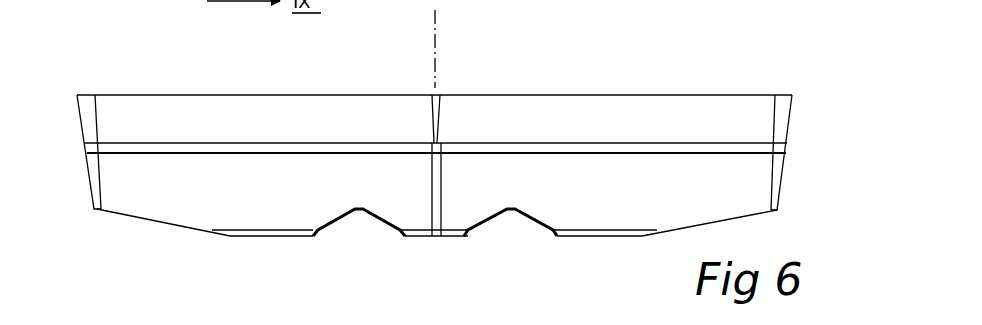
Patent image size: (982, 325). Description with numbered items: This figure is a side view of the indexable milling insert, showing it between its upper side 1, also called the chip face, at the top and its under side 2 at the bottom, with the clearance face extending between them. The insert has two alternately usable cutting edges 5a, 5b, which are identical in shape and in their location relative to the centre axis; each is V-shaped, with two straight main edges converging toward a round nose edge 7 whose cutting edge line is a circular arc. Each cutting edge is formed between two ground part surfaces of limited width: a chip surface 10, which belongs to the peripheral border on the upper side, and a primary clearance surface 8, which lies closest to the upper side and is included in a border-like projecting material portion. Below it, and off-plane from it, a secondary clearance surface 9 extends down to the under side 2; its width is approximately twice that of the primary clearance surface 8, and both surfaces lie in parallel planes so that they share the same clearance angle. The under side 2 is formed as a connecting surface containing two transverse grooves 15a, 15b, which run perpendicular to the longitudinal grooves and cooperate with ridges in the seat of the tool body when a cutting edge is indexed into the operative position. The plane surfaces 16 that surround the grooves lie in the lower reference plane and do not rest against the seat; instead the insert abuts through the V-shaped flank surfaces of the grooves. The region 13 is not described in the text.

The upper side 1 is at (527, 78).
The under side 2 is at (227, 244).
The cutting edge 5a is at (102, 93).
The cutting edge 5b is at (762, 93).
The nose edge 7 is at (156, 10).
The primary clearance surface 8 is at (630, 132).
The secondary clearance surface 9 is at (616, 197).
The chip surface 10 is at (275, 322).
The central region 13 is at (464, 277).
The transverse groove 15a is at (495, 220).
The transverse groove 15b is at (369, 220).
The plane surface 16 is at (593, 238).